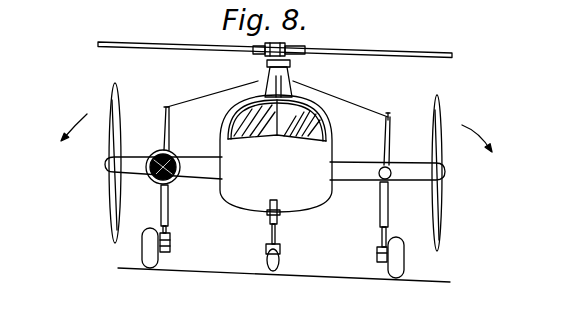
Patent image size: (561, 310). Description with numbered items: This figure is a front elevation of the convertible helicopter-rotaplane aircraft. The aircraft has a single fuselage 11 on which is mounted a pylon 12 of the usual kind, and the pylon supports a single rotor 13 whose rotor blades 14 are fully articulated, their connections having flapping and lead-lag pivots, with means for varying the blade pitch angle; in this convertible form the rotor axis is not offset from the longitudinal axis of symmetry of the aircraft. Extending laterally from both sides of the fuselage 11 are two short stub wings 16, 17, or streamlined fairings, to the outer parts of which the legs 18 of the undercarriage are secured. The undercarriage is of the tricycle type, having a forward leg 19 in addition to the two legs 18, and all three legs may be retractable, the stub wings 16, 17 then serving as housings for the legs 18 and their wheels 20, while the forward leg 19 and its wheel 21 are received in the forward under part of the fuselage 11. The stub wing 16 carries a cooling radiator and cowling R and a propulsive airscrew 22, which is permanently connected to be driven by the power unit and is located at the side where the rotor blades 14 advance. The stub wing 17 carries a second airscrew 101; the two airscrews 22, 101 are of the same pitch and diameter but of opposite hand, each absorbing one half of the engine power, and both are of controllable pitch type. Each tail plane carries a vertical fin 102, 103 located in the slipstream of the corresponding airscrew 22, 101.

The fuselage 11 is at (309, 195).
The pylon 12 is at (293, 76).
The rotor 13 is at (303, 50).
The rotor blades 14 is at (163, 33).
The stub wing 16 is at (192, 163).
The stub wing 17 is at (373, 137).
The undercarriage legs 18 is at (168, 205).
The forward leg 19 is at (269, 232).
The wheels 20 is at (140, 255).
The wheel 21 is at (267, 272).
The propulsive airscrew 22 is at (110, 97).
The airscrew 101 is at (440, 226).
The vertical fin 102 is at (168, 133).
The vertical fin 103 is at (415, 104).
The cooling radiator and cowling R is at (156, 179).